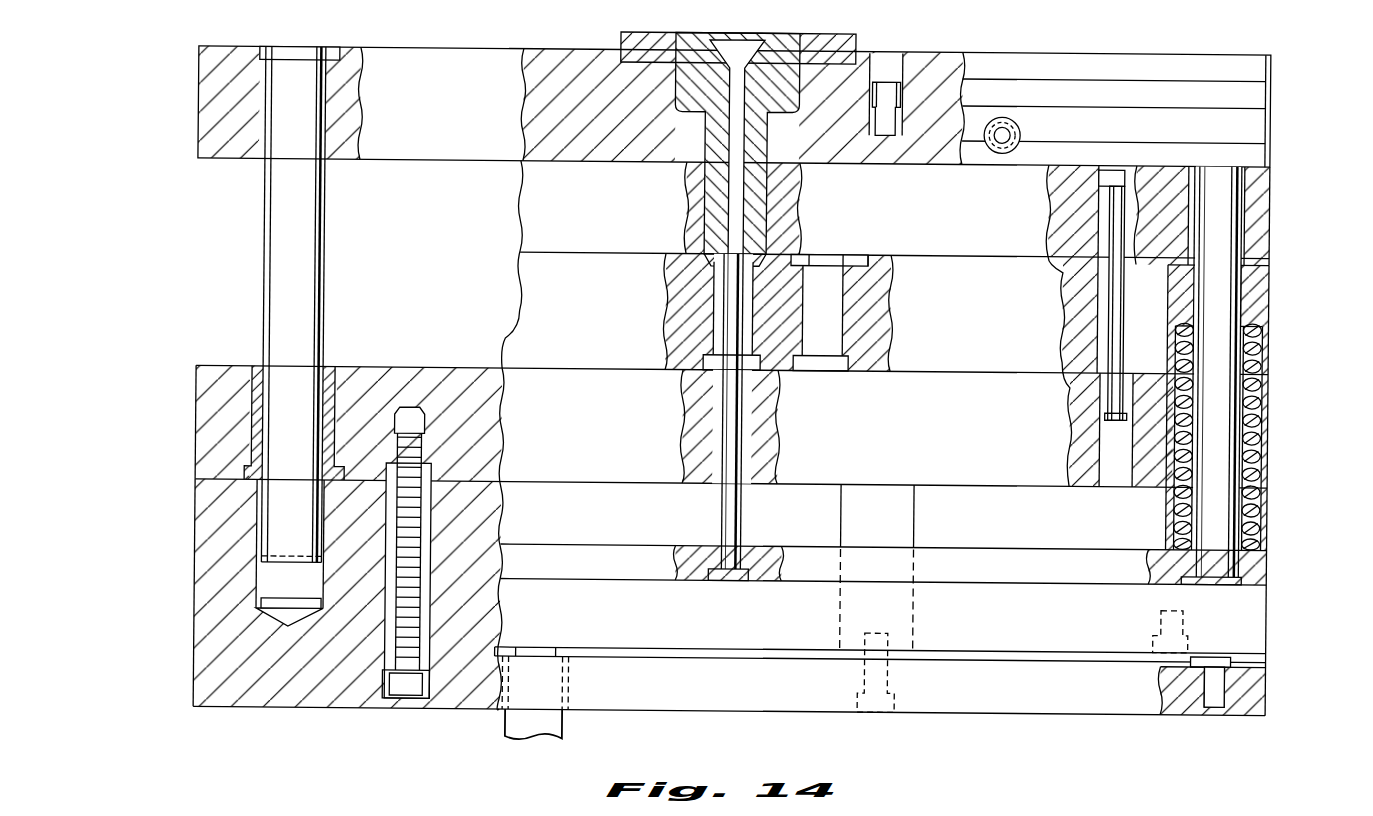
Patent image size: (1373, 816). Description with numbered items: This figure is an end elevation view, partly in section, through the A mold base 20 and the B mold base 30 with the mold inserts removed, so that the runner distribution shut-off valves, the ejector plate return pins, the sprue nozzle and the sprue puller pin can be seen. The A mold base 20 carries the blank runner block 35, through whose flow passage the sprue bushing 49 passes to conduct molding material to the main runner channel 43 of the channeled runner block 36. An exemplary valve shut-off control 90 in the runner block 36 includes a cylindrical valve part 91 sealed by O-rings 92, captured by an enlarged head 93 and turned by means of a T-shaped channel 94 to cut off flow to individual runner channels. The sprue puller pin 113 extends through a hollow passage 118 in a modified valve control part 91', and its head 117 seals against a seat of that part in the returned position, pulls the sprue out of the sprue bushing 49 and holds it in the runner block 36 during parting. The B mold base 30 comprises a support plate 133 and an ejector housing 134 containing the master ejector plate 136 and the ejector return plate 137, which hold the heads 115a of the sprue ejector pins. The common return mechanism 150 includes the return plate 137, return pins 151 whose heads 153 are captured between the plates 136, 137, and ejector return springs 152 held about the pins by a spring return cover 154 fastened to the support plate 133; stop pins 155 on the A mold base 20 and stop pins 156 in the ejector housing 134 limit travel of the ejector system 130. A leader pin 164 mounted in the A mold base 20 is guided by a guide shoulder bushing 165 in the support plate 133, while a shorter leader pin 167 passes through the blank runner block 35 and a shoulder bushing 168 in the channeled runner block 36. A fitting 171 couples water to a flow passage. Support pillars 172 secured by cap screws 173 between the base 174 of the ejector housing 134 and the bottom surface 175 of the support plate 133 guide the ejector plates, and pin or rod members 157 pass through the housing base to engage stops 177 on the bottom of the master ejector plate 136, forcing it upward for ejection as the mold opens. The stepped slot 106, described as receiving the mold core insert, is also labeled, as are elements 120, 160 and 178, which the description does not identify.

The A mold base 20 is at (199, 94).
The B mold base 30 is at (691, 397).
The blank runner block 35 is at (1270, 177).
The channeled runner block 36 is at (545, 272).
The main runner channel 43 is at (880, 256).
The sprue bushing 49 is at (703, 178).
The valve shut-off control 90 is at (839, 281).
The cylindrical valve part 91 is at (859, 326).
The modified valve control part 91' is at (669, 311).
The O-ring 92 is at (878, 350).
The enlarged head 93 is at (808, 254).
The T-shaped channel 94 is at (835, 254).
The stepped slot 106 is at (295, 605).
The sprue puller pin 113 is at (764, 436).
The head of sprue ejector pin 115a is at (720, 582).
The head portion of sprue puller pin 117 is at (716, 260).
The hollow passage 118 is at (730, 298).
The bolt 120 is at (410, 701).
The ejector system 130 is at (927, 513).
The support plate 133 is at (200, 430).
The ejector housing 134 is at (205, 513).
The master ejector plate 136 is at (912, 600).
The ejector return plate 137 is at (1270, 553).
The common return mechanism 150 is at (1265, 376).
The return pin 151 is at (1225, 438).
The ejector return spring 152 is at (1255, 486).
The head of return pin 153 is at (1262, 574).
The spring return cover 154 is at (1270, 302).
The stop pin 155 is at (1262, 210).
The stop pin 156 is at (1240, 659).
The pin or rod member 157 is at (563, 738).
The bolt 160 is at (881, 83).
The leader pin 164 is at (272, 217).
The guide shoulder bushing 165 is at (255, 368).
The shorter leader pin 167 is at (1108, 213).
The shoulder bushing 168 is at (1072, 244).
The fitting 171 is at (1018, 133).
The support pillar 172 is at (920, 620).
The cap screw 173 is at (884, 718).
The base of ejector housing 174 is at (885, 512).
The bottom surface of support plate 175 is at (962, 488).
The stop 177 is at (573, 700).
The stop plate 178 is at (565, 649).